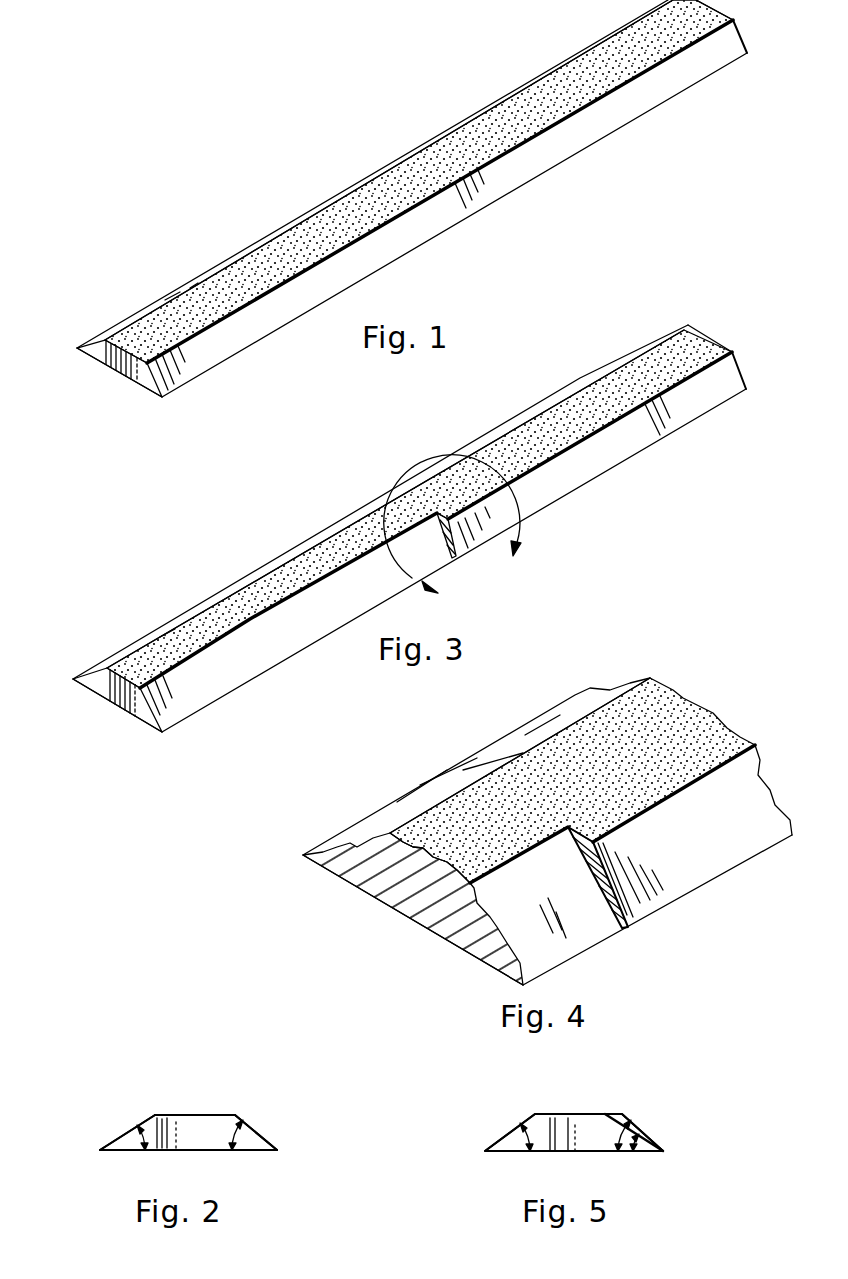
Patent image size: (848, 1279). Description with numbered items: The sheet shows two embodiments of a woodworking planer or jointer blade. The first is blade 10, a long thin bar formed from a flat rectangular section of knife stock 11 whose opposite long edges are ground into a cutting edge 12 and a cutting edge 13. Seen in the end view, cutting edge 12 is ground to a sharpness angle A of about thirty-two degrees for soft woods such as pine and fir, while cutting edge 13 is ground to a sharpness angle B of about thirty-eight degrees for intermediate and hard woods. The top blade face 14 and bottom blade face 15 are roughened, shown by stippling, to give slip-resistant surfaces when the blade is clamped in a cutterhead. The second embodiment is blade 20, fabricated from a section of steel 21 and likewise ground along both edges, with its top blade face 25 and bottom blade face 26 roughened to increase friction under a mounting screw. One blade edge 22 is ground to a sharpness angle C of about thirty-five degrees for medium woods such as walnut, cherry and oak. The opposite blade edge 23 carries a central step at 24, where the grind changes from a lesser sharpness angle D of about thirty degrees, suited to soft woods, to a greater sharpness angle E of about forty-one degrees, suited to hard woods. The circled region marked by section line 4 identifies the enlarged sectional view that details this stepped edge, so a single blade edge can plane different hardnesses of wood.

In FIG. 1, the blade 10 is at (406, 134).
In FIG. 2, the blade 10 is at (230, 1101).
In FIG. 1, the knife stock 11 is at (95, 358).
In FIG. 2, the knife stock 11 is at (180, 1124).
In FIG. 1, the cutting edge 12 is at (203, 275).
In FIG. 2, the cutting edge 12 is at (118, 1141).
In FIG. 1, the cutting edge 13 is at (266, 317).
In FIG. 2, the cutting edge 13 is at (266, 1139).
In FIG. 1, the top blade face 14 is at (318, 234).
In FIG. 2, the top blade face 14 is at (201, 1114).
In FIG. 1, the bottom blade face 15 is at (130, 383).
In FIG. 2, the bottom blade face 15 is at (186, 1152).
In FIG. 3, the blade 20 is at (608, 354).
In FIG. 5, the blade 20 is at (574, 1132).
In FIG. 3, the section of steel 21 is at (95, 692).
In FIG. 4, the section of steel 21 is at (378, 883).
In FIG. 5, the section of steel 21 is at (562, 1134).
In FIG. 3, the blade edge 22 is at (120, 650).
In FIG. 4, the blade edge 22 is at (372, 826).
In FIG. 5, the blade edge 22 is at (510, 1141).
In FIG. 3, the blade edge 23 is at (485, 532).
In FIG. 4, the blade edge 23 is at (700, 887).
In FIG. 5, the blade edge 23 is at (626, 1121).
In FIG. 3, the step 24 is at (456, 566).
In FIG. 4, the step 24 is at (628, 930).
In FIG. 5, the step 24 is at (637, 1146).
In FIG. 3, the top blade face 25 is at (276, 583).
In FIG. 4, the top blade face 25 is at (658, 750).
In FIG. 3, the bottom blade face 26 is at (136, 715).
In FIG. 4, the bottom blade face 26 is at (428, 929).
In FIG. 3, the section line 4- 4 is at (457, 535).
In FIG. 2, the sharpness angle A is at (135, 1140).
In FIG. 2, the sharpness angle B is at (235, 1124).
In FIG. 5, the sharpness angle C is at (538, 1114).
In FIG. 5, the sharpness angle D is at (641, 1141).
In FIG. 5, the sharpness angle E is at (605, 1113).